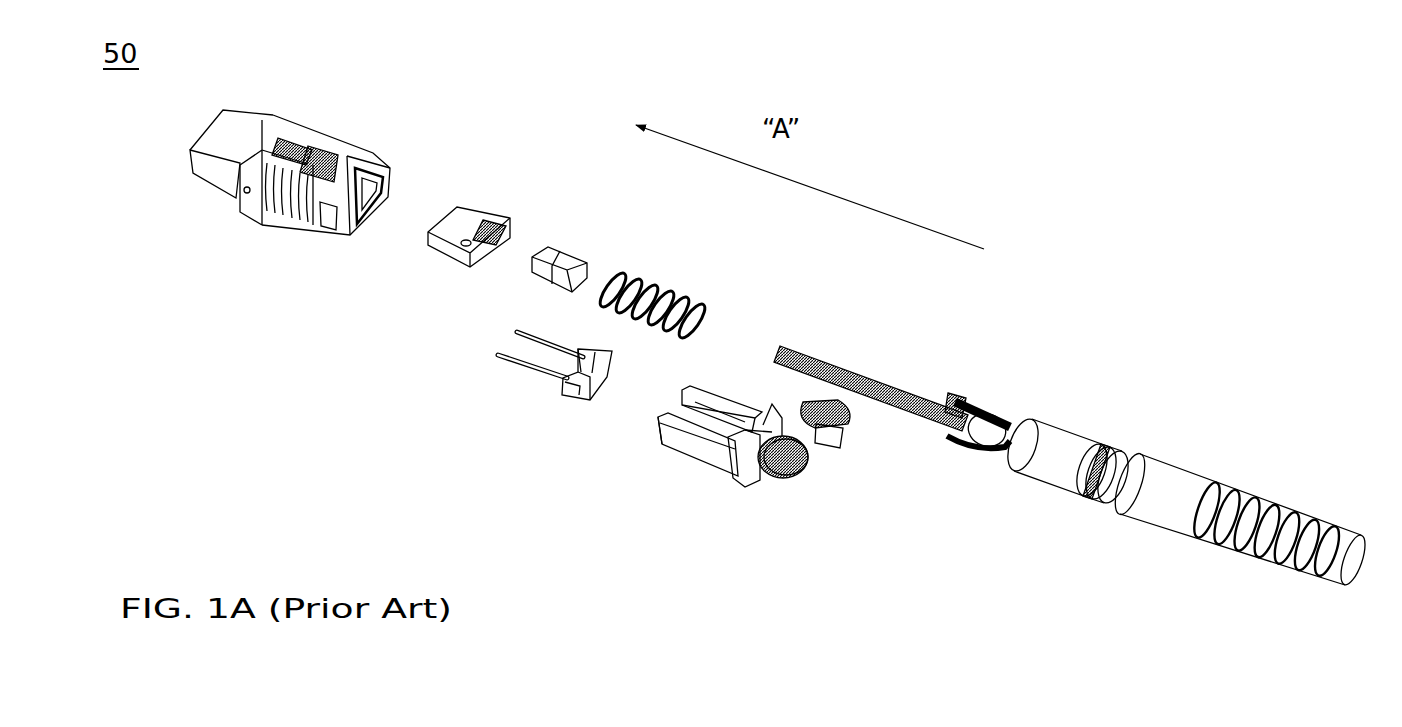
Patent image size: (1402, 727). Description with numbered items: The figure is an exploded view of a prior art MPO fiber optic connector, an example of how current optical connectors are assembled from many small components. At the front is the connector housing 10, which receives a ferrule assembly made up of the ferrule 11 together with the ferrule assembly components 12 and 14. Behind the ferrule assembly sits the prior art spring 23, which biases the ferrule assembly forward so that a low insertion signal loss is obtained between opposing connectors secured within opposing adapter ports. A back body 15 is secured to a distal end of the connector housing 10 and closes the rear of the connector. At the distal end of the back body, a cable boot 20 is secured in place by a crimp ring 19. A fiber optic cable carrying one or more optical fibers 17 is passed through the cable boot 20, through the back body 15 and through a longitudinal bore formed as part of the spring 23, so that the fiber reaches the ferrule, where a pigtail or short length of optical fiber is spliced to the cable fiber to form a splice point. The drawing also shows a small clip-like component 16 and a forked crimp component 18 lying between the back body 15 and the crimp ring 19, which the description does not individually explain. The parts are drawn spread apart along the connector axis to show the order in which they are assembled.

The connector housing 10 is at (236, 223).
The ferrule 11 is at (453, 226).
The ferrule assembly component 12 is at (563, 250).
The ferrule assembly component 14 is at (509, 395).
The back body 15 is at (677, 467).
The clip 16 is at (848, 455).
The optical fibers 17 is at (859, 363).
The spring push 18 is at (973, 396).
The crimp ring 19 is at (1068, 457).
The cable boot 20 is at (1195, 490).
The spring 23 is at (659, 285).